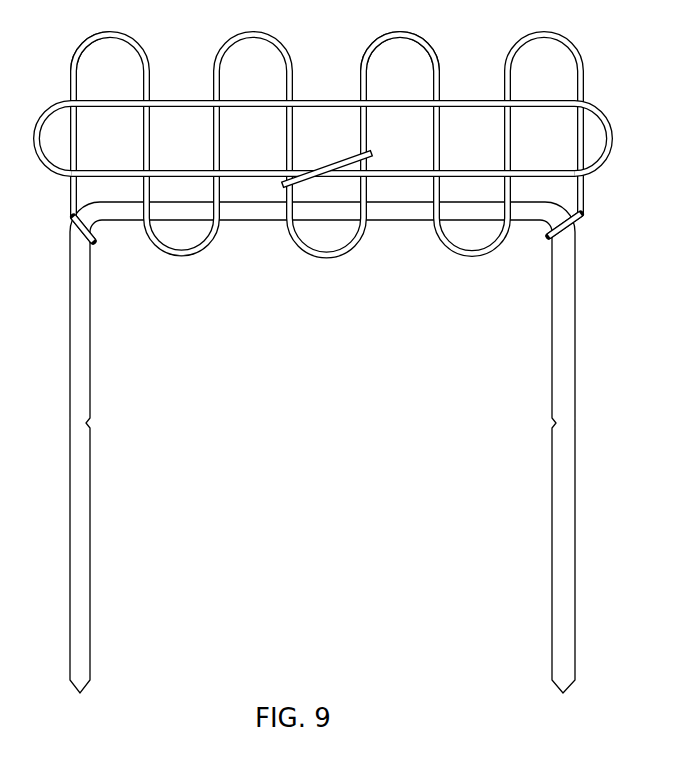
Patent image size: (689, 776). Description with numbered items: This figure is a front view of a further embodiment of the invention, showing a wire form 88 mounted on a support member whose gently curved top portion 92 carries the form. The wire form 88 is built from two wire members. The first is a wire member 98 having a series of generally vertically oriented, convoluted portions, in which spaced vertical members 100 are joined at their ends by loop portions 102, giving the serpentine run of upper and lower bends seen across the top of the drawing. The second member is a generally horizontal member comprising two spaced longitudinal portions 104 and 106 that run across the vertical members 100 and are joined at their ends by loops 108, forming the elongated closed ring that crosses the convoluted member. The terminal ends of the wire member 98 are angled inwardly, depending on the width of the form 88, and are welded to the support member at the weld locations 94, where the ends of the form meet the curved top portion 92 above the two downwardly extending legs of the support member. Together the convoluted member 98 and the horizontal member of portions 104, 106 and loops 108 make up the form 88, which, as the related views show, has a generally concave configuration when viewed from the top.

The wire form 88 is at (455, 50).
The curved top portion 92 is at (421, 222).
The weld 94 is at (92, 260).
The wire member 98 is at (577, 137).
The vertical members 100 is at (223, 135).
The loop portions 102 is at (396, 30).
The longitudinal portion 104 is at (493, 99).
The longitudinal portion 106 is at (227, 172).
The loops 108 is at (70, 58).